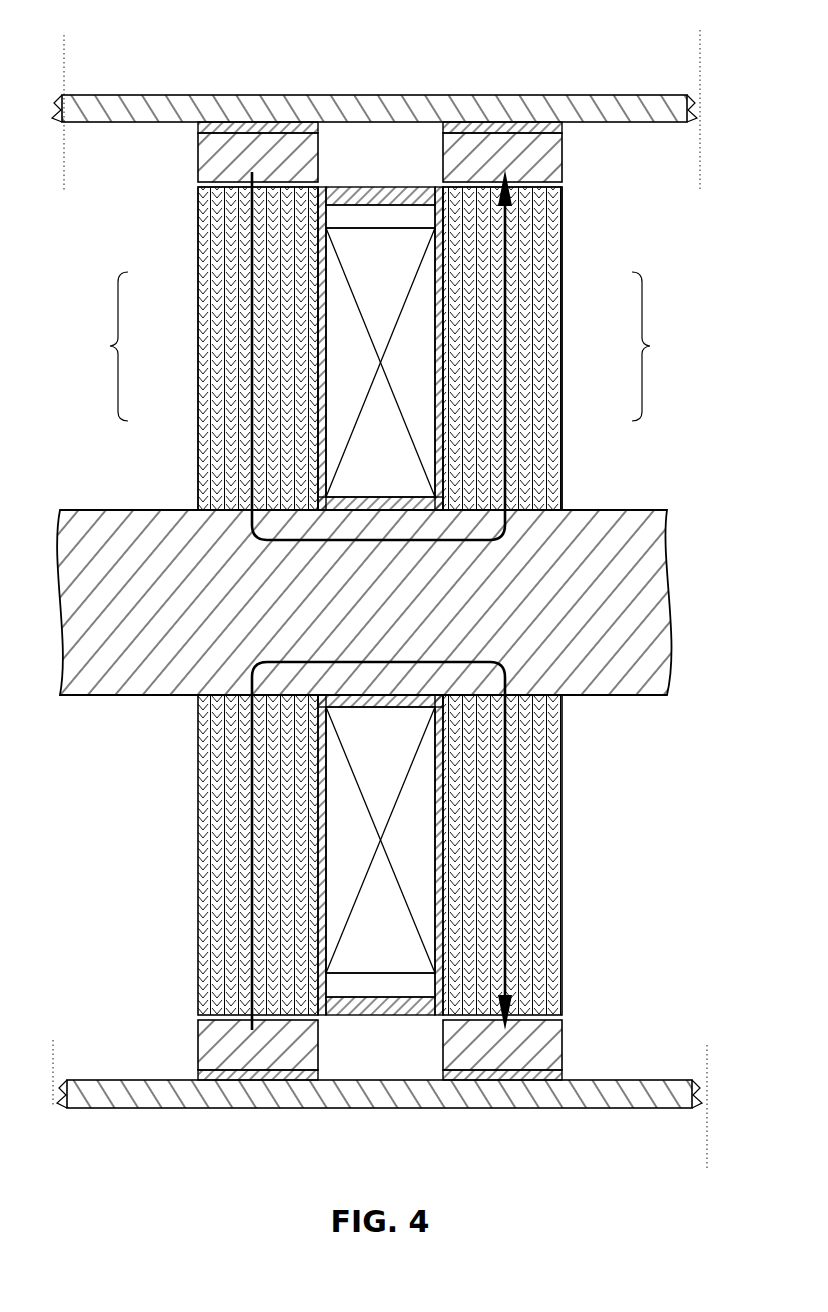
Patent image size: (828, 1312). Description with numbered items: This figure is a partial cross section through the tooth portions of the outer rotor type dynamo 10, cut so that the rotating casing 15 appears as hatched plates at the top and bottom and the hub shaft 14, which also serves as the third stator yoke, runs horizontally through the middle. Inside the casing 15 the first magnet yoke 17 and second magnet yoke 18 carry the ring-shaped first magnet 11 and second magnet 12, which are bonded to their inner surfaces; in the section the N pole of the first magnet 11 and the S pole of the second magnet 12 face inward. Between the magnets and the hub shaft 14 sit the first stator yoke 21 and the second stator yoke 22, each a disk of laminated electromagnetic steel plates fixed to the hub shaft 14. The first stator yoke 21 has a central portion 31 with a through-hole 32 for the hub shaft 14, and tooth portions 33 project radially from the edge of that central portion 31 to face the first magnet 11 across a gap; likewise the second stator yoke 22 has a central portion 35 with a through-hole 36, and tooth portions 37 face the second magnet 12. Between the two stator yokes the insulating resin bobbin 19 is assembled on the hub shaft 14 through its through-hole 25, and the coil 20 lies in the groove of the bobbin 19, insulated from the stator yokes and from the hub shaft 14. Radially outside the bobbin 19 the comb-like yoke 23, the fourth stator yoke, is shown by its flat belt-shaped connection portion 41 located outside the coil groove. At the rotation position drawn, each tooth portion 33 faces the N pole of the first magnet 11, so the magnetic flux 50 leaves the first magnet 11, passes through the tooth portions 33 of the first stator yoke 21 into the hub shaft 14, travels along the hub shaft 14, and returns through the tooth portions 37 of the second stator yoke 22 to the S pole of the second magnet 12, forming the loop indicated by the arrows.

The outer rotor type dynamo 10 is at (100, 812).
The first magnet 11 is at (198, 170).
The second magnet 12 is at (562, 165).
The hub shaft 14 is at (96, 508).
The casing 15 is at (133, 93).
The first magnet yoke 17 is at (196, 128).
The second magnet yoke 18 is at (565, 125).
The bobbin 19 is at (466, 514).
The coil 20 is at (409, 226).
The first stator yoke 21 is at (197, 348).
The second stator yoke 22 is at (559, 348).
The comb-like yoke 23 is at (378, 188).
The through-hole 25 is at (450, 507).
The central portion 31 is at (198, 409).
The through-hole 32 is at (196, 700).
The tooth portions 33 is at (198, 294).
The central portion 35 is at (555, 398).
The through-hole 36 is at (565, 697).
The tooth portions 37 is at (553, 287).
The connection portion 41 is at (410, 109).
The magnetic flux 50 is at (515, 240).